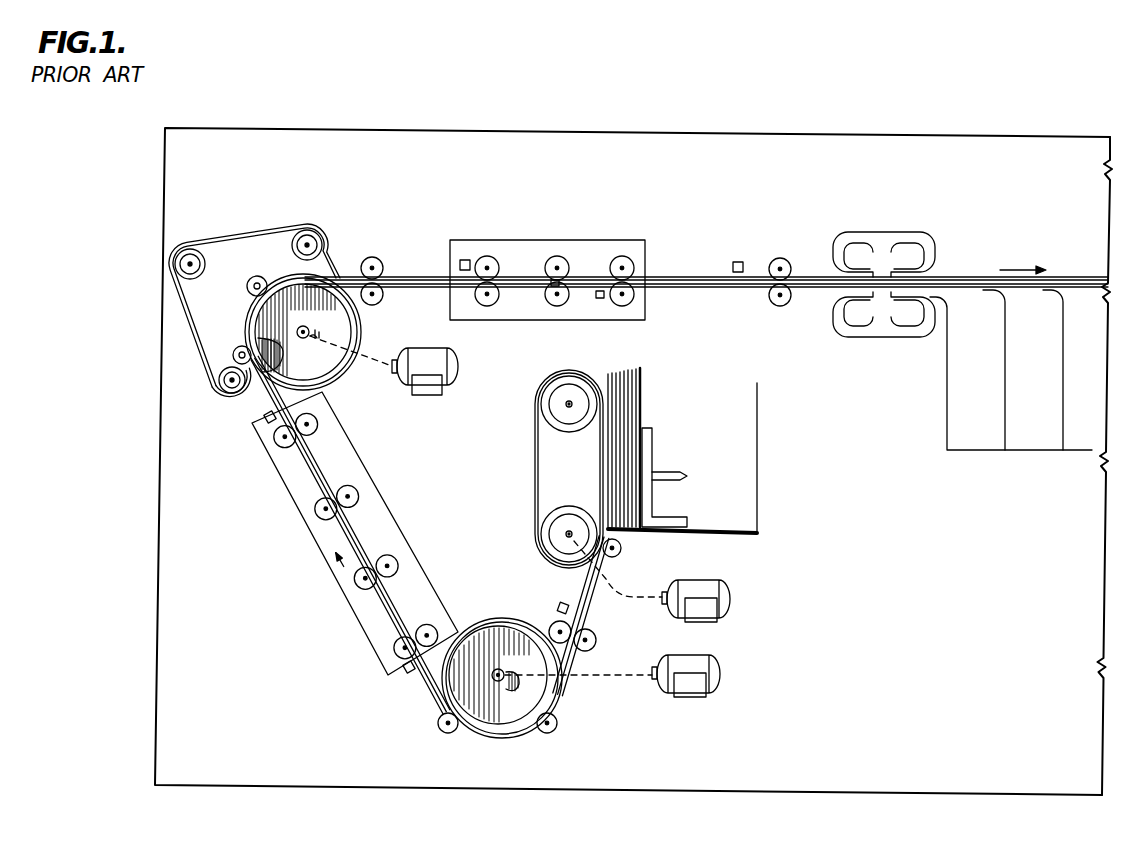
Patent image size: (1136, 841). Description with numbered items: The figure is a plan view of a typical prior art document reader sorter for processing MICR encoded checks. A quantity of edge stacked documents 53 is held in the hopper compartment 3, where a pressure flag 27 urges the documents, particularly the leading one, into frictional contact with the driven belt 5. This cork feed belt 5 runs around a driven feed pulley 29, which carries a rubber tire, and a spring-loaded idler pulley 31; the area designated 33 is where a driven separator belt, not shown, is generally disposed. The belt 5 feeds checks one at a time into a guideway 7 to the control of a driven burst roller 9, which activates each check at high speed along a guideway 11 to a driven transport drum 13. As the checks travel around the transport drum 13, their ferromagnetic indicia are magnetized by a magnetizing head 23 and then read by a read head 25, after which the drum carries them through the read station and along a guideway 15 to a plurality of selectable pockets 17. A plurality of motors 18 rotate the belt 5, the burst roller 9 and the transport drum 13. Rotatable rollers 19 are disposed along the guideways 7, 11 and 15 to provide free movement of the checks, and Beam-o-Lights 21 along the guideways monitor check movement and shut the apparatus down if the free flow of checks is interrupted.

The hopper compartment 3 is at (682, 458).
The driven belt 5 is at (540, 469).
The guideway 7 is at (590, 616).
The driven burst roller 9 is at (500, 698).
The guideway 11 is at (354, 534).
The driven transport drum 13 is at (310, 346).
The guideway 15 is at (706, 257).
The selectable pockets 17 is at (962, 324).
The motors 18 is at (555, 516).
The rotatable rollers 19 is at (515, 427).
The Beam-o-Lights 21 is at (471, 434).
The magnetizing head 23 is at (241, 385).
The read head 25 is at (254, 310).
The pressure flag 27 is at (688, 493).
The driven feed pulley 29 is at (569, 513).
The spring-loaded idler pulley 31 is at (556, 389).
The separator belt area 33 is at (639, 554).
The edge stacked documents 53 is at (646, 426).